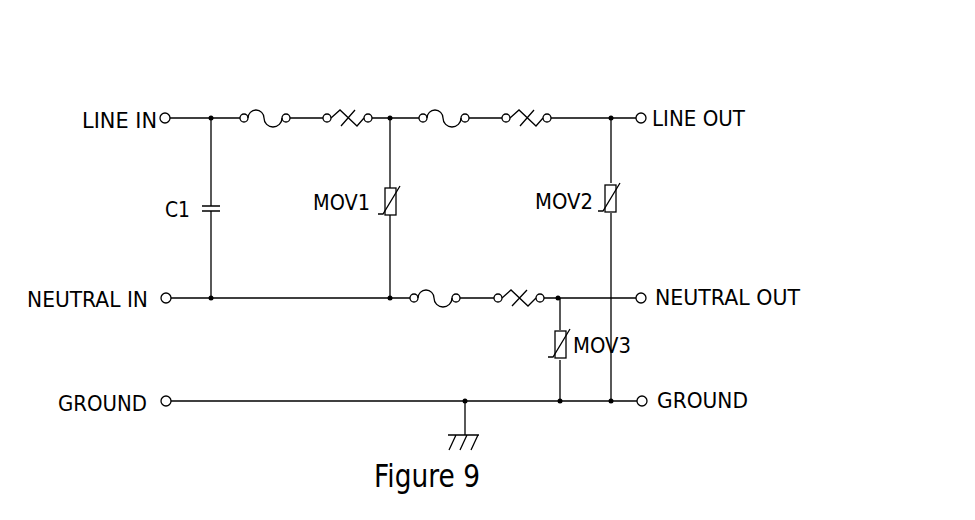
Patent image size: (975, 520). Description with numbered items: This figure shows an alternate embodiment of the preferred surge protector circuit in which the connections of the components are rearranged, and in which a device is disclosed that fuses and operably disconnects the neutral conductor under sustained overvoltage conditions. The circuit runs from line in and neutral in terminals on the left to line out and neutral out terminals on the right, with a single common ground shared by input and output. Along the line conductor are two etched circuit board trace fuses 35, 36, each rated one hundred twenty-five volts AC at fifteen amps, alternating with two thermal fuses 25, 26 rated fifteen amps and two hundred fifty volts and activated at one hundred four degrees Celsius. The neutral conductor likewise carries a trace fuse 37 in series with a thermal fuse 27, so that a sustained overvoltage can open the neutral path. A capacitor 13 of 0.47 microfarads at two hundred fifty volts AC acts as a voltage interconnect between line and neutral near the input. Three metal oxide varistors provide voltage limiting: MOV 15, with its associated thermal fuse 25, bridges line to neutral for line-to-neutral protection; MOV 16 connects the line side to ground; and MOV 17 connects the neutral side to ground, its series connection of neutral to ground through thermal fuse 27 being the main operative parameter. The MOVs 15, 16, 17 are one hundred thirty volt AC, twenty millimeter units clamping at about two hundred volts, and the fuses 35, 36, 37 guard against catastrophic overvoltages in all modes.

The fuse 35 is at (257, 90).
The thermal fuse 25 is at (346, 90).
The fuse 36 is at (449, 88).
The thermal fuse 26 is at (525, 88).
The fuse 37 is at (433, 276).
The thermal fuse 27 is at (519, 287).
The capacitor 13 is at (230, 208).
The voltage limiter (MOV) 15 is at (402, 201).
The voltage limiter (MOV) 16 is at (627, 200).
The voltage limiter (MOV) 17 is at (545, 343).